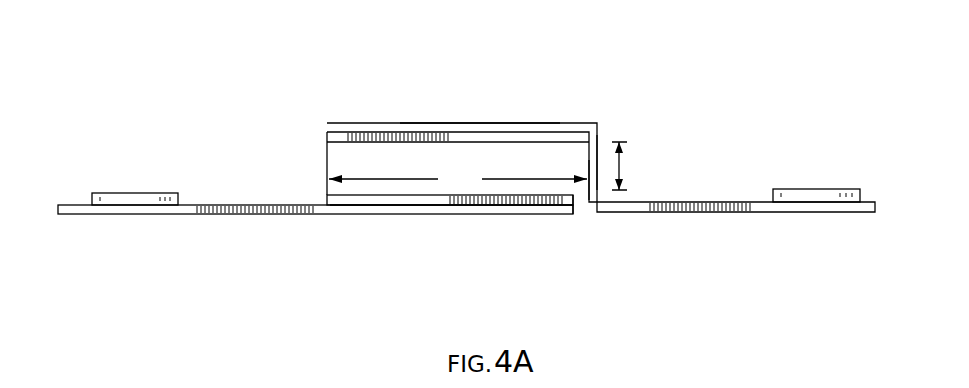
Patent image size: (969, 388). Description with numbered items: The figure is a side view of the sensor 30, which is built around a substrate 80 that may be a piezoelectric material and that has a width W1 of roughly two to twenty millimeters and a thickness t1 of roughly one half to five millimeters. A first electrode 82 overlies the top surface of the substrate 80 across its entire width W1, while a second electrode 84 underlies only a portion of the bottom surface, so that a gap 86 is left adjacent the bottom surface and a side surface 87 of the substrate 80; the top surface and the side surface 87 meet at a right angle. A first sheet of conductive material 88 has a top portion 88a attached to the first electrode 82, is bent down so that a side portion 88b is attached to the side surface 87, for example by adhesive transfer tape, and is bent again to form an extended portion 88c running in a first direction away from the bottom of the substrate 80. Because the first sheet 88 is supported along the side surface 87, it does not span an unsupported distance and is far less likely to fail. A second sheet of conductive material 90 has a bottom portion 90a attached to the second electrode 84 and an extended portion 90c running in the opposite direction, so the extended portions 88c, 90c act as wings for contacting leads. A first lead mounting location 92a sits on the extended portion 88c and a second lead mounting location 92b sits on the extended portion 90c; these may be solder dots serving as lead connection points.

The sensor 30 is at (437, 90).
The substrate 80 is at (327, 168).
The first electrode 82 is at (483, 133).
The second electrode 84 is at (407, 205).
The gap 86 is at (582, 205).
The side surface 87 is at (593, 170).
The first sheet of conductive material 88 is at (532, 125).
The top portion 88a is at (468, 128).
The side portion 88b is at (593, 153).
The extended portion 88c is at (740, 215).
The second sheet of conductive material 90 is at (315, 212).
The bottom portion 90a is at (503, 207).
The extended portion 90c is at (242, 213).
The first lead mounting location 92a is at (825, 195).
The second lead mounting location 92b is at (127, 195).
The width W1 is at (458, 179).
The thickness t1 is at (625, 166).